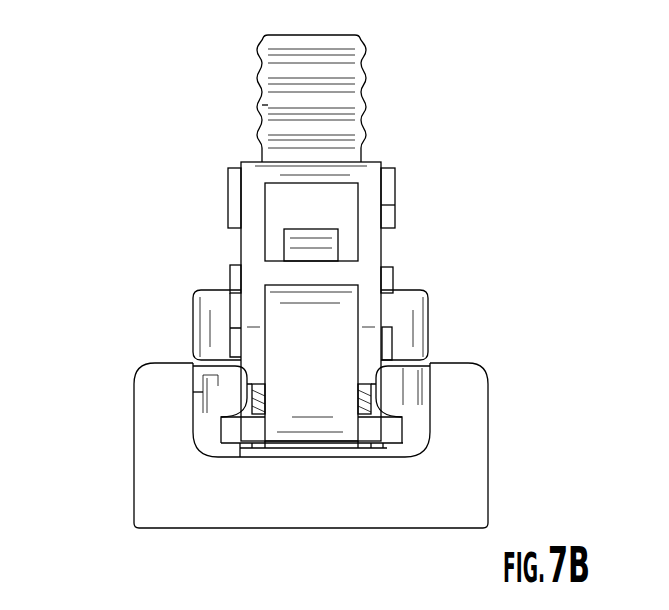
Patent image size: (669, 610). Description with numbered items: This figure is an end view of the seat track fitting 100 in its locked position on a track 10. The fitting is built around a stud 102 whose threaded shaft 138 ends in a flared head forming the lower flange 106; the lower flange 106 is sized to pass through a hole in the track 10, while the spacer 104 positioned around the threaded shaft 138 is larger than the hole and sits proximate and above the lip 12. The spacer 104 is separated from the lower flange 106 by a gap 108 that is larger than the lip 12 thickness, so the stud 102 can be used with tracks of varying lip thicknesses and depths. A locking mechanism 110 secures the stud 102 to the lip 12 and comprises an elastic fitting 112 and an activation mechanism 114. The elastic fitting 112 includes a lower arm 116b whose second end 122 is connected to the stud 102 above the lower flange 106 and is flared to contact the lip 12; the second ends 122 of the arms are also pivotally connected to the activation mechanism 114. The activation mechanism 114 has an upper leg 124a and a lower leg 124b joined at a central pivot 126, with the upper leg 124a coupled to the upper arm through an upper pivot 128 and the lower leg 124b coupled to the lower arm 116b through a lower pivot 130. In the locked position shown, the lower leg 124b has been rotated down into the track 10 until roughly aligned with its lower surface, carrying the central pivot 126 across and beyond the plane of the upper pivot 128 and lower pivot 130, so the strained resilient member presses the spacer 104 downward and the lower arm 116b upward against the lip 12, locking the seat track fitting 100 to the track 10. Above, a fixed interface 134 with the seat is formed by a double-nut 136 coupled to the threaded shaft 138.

The seat track fitting 100 is at (99, 113).
The track 10 is at (183, 485).
The lip 12 is at (222, 373).
The stud 102 is at (365, 82).
The spacer 104 is at (428, 320).
The lower flange 106 is at (372, 443).
The gap 108 is at (243, 392).
The locking mechanism 110 is at (257, 241).
The elastic fitting 112 is at (252, 428).
The activation mechanism 114 is at (310, 380).
The lower arm 116b is at (222, 420).
The second end 122 is at (398, 443).
The upper leg 124a is at (283, 205).
The lower leg 124b is at (288, 342).
The central pivot 126 is at (393, 352).
The upper pivot 128 is at (393, 280).
The lower pivot 130 is at (376, 400).
The fixed interface 134 is at (393, 218).
The double-nut 136 is at (385, 192).
The threaded shaft 138 is at (258, 110).